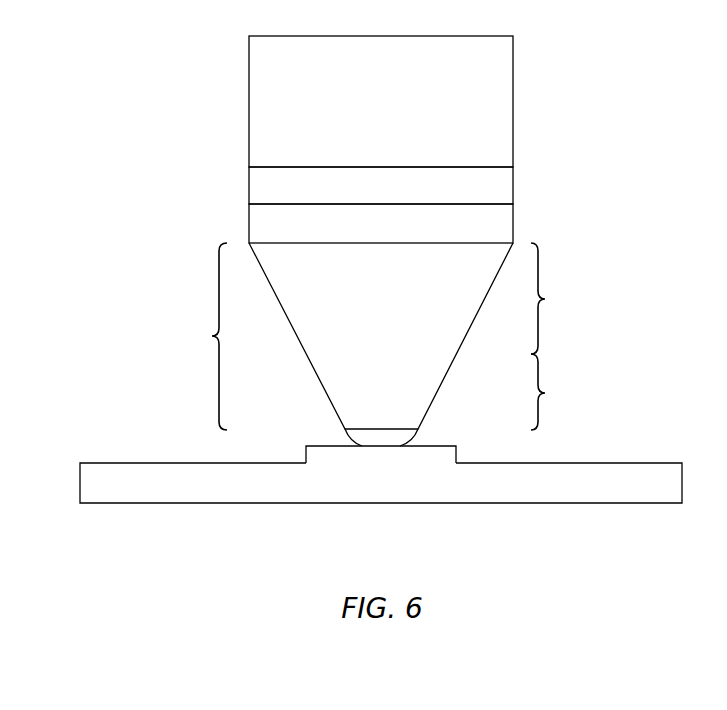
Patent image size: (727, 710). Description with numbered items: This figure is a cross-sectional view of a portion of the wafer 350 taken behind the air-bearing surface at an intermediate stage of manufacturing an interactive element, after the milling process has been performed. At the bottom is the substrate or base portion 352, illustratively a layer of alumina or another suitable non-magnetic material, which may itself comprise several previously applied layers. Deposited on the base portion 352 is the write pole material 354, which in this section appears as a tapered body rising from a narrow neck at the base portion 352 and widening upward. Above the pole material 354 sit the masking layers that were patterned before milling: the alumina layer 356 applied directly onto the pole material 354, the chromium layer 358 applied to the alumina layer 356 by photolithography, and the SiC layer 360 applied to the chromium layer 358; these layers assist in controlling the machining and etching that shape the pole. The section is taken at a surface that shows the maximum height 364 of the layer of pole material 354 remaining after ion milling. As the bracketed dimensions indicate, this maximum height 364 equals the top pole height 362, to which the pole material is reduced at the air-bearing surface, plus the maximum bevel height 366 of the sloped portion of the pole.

The wafer 350 is at (150, 96).
The base portion 352 is at (358, 477).
The pole material 354 is at (358, 347).
The alumina layer 356 is at (358, 234).
The chromium layer 358 is at (358, 196).
The SiC layer 360 is at (358, 114).
The top pole height 362 is at (566, 298).
The maximum height 364 is at (193, 336).
The maximum bevel height 366 is at (566, 392).